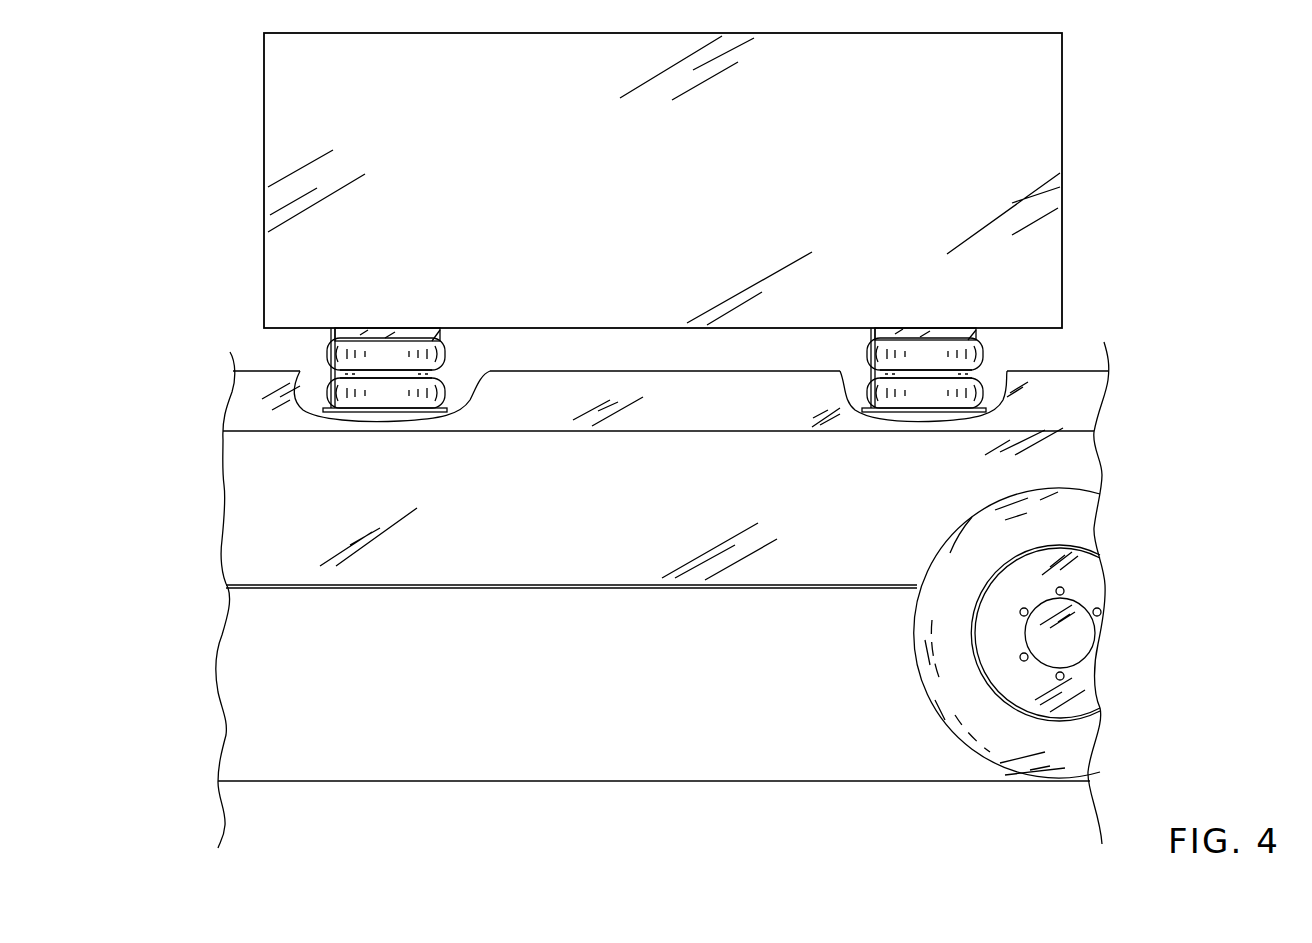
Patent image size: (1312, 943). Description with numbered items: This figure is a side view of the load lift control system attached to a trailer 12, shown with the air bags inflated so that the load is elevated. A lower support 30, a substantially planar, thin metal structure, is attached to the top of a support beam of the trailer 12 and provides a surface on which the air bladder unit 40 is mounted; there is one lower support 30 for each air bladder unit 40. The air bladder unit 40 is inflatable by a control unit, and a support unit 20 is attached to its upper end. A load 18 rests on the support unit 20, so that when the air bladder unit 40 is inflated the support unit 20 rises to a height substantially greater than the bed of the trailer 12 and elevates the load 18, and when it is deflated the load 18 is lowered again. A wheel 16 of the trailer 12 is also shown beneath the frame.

The trailer 12 is at (1060, 395).
The wheel 16 is at (1085, 745).
The load 18 is at (1008, 95).
The support unit 20 is at (340, 324).
The lower support 30 is at (375, 415).
The air bladder unit 40 is at (360, 353).